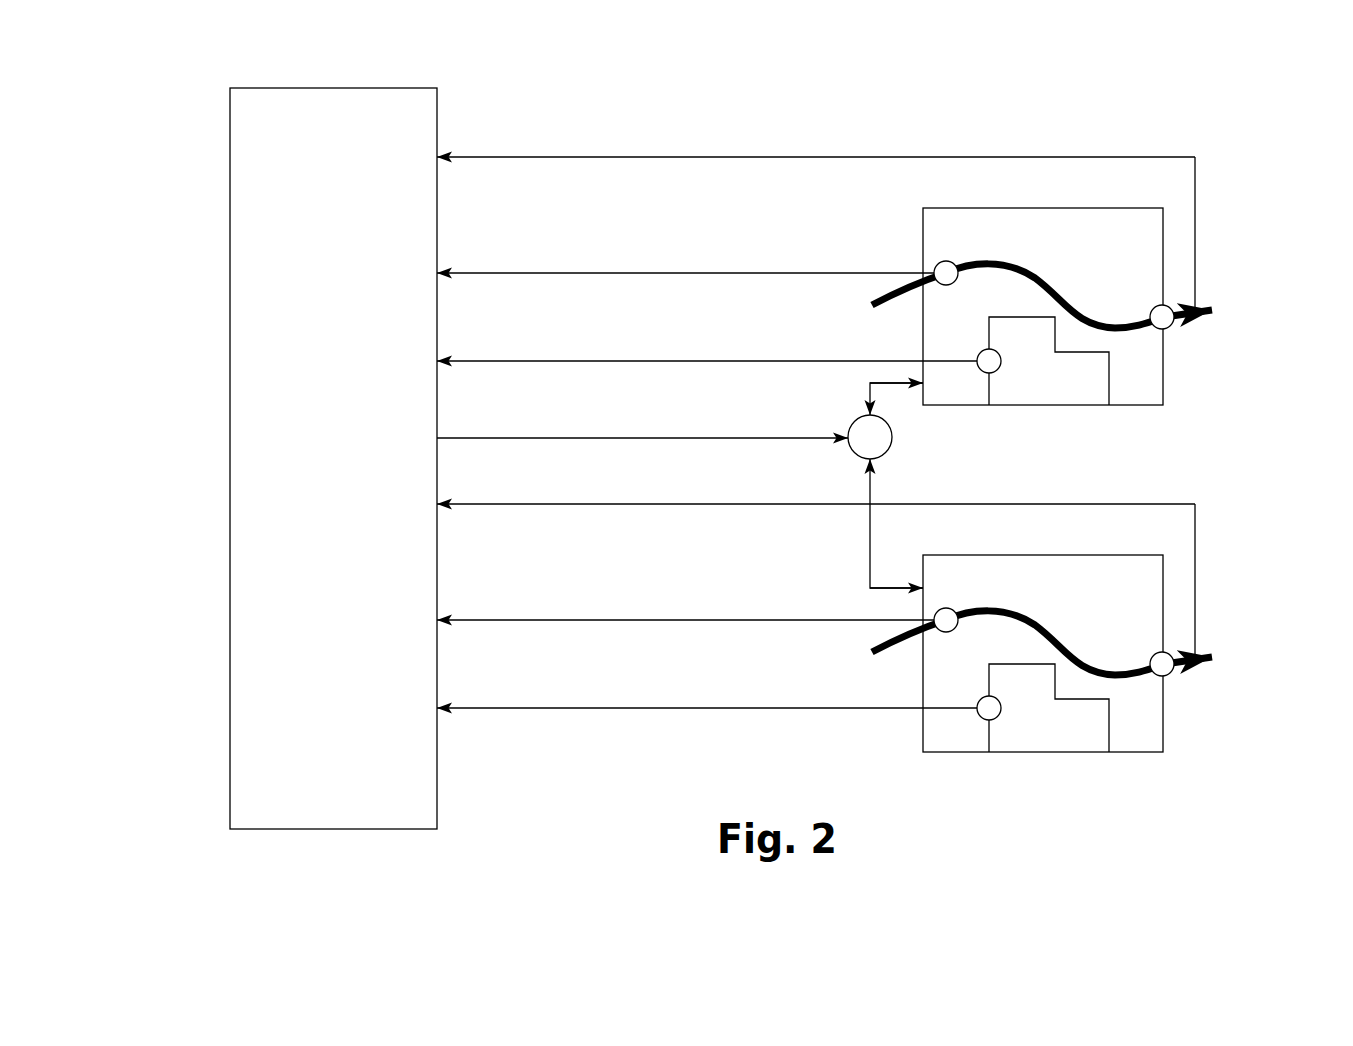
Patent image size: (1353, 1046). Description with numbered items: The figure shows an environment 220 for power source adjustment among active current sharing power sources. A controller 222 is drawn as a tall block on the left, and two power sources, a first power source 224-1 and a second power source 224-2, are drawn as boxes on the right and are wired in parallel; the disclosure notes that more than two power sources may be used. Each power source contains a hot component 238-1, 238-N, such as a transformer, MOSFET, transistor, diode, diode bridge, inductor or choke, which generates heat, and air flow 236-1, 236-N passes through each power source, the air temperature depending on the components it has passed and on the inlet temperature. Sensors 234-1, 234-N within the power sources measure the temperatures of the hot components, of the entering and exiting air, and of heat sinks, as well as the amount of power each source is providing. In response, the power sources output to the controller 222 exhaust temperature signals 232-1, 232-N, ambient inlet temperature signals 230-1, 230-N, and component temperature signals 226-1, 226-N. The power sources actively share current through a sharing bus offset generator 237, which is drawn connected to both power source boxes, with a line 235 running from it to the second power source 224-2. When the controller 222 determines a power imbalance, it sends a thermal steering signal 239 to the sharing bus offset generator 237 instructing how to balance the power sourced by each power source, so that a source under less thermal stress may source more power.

The environment 220 is at (1002, 87).
The controller 222 is at (230, 165).
The power source 224-1 is at (1163, 370).
The second processing station 224-2 is at (1092, 653).
The component temperature signal 226-1 is at (676, 362).
The component temperature signal 226-N is at (713, 734).
The inlet temperature signal 230-1 is at (676, 275).
The inlet temperature signal 230-N is at (691, 646).
The exhaust temperature signal 232-1 is at (676, 158).
The exhaust temperature signal 232-N is at (816, 584).
The sensor 234-1 is at (952, 288).
The sensor 234-N is at (1043, 706).
The feedback signal 235 is at (868, 536).
The air flow 236-1 is at (1087, 318).
The air flow 236-N is at (1174, 614).
The sharing bus offset generator 237 is at (892, 445).
The hot component 238-1 is at (1036, 341).
The hot component 238-N is at (1042, 600).
The thermal steering signal 239 is at (752, 432).